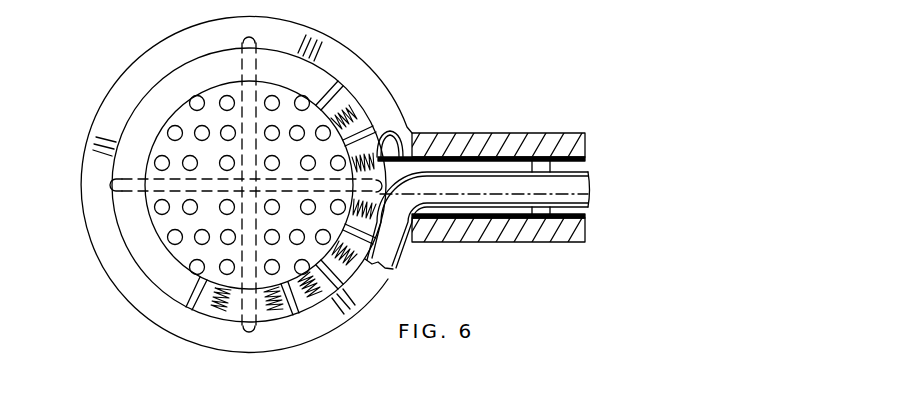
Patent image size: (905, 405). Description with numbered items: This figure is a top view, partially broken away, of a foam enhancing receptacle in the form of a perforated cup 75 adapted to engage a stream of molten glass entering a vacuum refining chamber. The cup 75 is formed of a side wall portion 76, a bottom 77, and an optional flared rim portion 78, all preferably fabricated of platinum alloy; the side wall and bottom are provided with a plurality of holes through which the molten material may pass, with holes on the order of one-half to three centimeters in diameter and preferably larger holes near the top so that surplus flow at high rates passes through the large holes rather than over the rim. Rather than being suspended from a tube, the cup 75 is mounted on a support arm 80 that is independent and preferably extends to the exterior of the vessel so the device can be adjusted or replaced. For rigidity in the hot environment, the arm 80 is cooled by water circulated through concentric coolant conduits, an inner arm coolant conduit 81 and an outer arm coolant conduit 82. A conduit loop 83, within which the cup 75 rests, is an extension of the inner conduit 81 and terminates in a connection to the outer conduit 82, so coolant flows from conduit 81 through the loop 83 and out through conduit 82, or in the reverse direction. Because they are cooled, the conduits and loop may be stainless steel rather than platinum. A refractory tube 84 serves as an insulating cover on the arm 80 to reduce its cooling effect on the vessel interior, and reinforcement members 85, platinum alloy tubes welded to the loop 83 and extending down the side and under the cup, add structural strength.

The perforated cup 75 is at (95, 92).
The side wall portion 76 is at (128, 223).
The bottom 77 is at (178, 253).
The flared rim portion 78 is at (93, 134).
The support arm 80 is at (537, 118).
The inner arm coolant conduit 81 is at (583, 172).
The outer arm coolant conduit 82 is at (583, 210).
The conduit loop 83 is at (392, 130).
The refractory tube 84 is at (513, 243).
The reinforcement members 85 is at (104, 186).